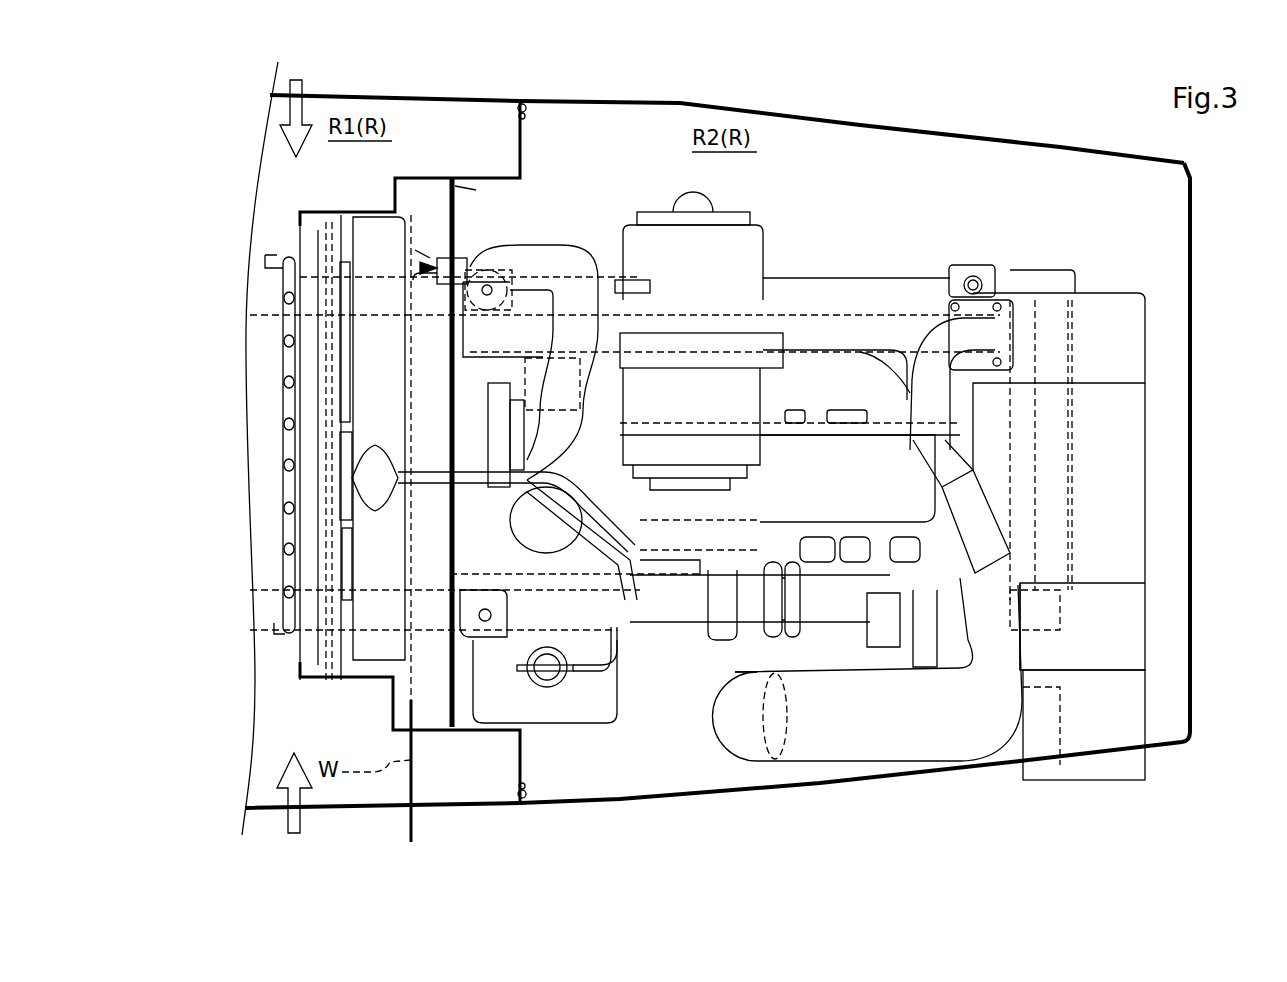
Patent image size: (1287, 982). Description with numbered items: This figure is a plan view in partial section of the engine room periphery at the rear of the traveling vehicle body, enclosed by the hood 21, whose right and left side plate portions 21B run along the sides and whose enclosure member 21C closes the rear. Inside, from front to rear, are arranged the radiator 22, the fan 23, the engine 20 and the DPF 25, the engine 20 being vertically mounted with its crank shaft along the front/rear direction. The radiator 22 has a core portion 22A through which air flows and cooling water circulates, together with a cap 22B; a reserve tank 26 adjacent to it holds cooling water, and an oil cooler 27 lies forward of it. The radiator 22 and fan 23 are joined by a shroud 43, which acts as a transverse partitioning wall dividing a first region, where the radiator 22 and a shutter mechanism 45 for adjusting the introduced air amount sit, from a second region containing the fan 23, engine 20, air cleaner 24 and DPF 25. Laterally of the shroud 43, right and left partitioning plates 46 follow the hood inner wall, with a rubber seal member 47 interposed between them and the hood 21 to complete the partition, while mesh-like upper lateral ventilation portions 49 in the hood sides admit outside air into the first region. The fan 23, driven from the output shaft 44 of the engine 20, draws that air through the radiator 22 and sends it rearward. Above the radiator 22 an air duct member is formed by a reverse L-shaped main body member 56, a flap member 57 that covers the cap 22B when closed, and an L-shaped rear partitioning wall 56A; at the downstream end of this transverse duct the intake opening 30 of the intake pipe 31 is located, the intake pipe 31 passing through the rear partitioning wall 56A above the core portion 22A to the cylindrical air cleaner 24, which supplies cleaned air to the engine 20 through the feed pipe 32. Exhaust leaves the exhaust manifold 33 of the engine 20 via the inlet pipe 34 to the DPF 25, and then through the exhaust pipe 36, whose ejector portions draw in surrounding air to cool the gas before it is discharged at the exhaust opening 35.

The engine 20 is at (870, 287).
The hood 21 is at (1020, 90).
The side plate portions 21B is at (893, 125).
The enclosure member 21C is at (1192, 485).
The radiator 22 is at (416, 240).
The core portion 22A is at (340, 424).
The cap 22B is at (385, 455).
The fan 23 is at (417, 573).
The air cleaner 24 is at (755, 252).
The DPF 25 is at (1105, 305).
The reserve tank 26 is at (608, 693).
The oil cooler 27 is at (285, 333).
The intake opening 30 is at (445, 262).
The intake pipe 31 is at (572, 252).
The feed pipe 32 is at (655, 622).
The exhaust manifold 33 is at (815, 630).
The inlet pipe 34 is at (892, 638).
The exhaust opening 35 is at (1120, 780).
The exhaust pipe 36 is at (718, 718).
The shroud 43 is at (420, 245).
The output shaft 44 is at (514, 400).
The shutter mechanism 45 is at (305, 355).
The partitioning plates 46 is at (525, 166).
The rubber seal member 47 is at (528, 112).
The upper lateral ventilation portions 49 is at (405, 99).
The main body member 56 is at (325, 290).
The rear partitioning wall 56A is at (476, 190).
The flap member 57 is at (345, 490).